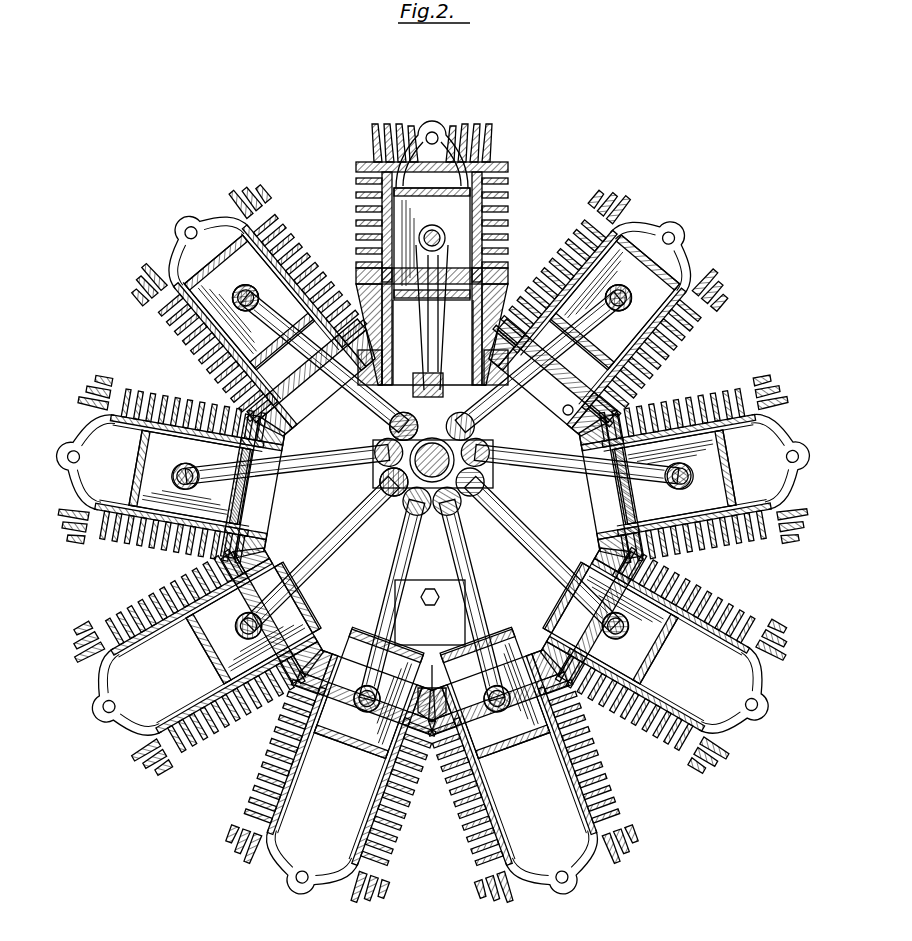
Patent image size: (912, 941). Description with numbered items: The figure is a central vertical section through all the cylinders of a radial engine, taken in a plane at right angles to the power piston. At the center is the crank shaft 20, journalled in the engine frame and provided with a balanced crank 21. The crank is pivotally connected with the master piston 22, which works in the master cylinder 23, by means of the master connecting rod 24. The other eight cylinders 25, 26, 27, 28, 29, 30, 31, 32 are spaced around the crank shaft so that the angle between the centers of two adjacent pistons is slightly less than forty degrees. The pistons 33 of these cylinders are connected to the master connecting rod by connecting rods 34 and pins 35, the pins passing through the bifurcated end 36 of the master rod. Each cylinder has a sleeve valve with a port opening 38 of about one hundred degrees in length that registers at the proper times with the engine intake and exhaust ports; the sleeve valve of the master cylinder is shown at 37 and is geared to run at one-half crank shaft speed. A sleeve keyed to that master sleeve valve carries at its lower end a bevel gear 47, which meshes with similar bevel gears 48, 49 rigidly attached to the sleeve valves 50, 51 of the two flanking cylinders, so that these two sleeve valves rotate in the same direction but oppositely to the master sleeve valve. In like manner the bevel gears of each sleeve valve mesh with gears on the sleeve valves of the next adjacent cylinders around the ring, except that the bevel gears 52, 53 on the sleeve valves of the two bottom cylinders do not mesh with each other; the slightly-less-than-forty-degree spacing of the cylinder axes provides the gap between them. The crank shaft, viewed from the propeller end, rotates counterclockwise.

The crank shaft 20 is at (412, 466).
The balanced crank 21 is at (430, 596).
The master piston 22 is at (470, 228).
The master cylinder 23 is at (505, 190).
The master connecting rod 24 is at (442, 330).
The cylinder 25 is at (285, 245).
The cylinder 26 is at (138, 402).
The cylinder 27 is at (132, 615).
The cylinder 28 is at (258, 795).
The cylinder 29 is at (492, 866).
The cylinder 30 is at (682, 742).
The cylinder 31 is at (766, 530).
The cylinder 32 is at (670, 318).
The pistons 33 is at (246, 285).
The connecting rods 34 is at (488, 414).
The pins 35 is at (389, 428).
The bifurcated end 36 is at (428, 395).
The sleeve valve 37 is at (472, 326).
The port opening 38 is at (293, 698).
The bevel gear 47 is at (380, 360).
The bevel gear 48 is at (377, 373).
The bevel gear 49 is at (481, 373).
The sleeve valve 50 is at (335, 348).
The sleeve valve 51 is at (571, 403).
The bevel gear 52 is at (432, 678).
The bevel gear 53 is at (432, 705).